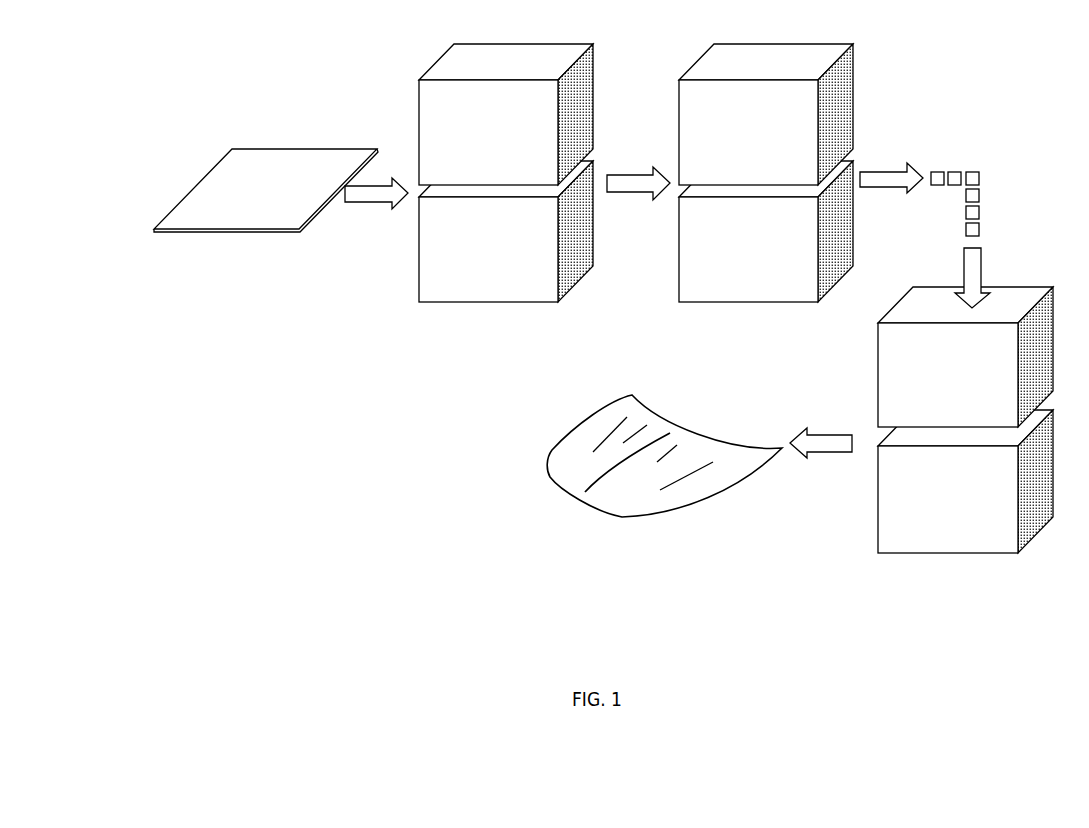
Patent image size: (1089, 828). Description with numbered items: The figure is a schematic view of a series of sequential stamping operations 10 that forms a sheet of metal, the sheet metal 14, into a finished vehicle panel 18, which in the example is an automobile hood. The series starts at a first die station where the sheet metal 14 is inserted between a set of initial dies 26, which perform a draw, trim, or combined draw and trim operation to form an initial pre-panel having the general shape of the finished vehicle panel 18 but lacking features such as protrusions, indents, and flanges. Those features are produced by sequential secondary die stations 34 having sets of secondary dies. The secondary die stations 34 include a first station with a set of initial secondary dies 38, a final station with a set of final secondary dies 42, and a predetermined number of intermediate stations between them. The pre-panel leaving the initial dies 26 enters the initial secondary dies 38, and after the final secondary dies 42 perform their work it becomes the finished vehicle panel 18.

The series of sequential stamping operations 10 is at (226, 447).
The sheet metal 14 is at (223, 189).
The finished vehicle panel 18 is at (615, 500).
The initial dies 26 is at (450, 314).
The secondary die stations 34 is at (995, 116).
The initial secondary dies 38 is at (736, 312).
The final secondary dies 42 is at (952, 562).